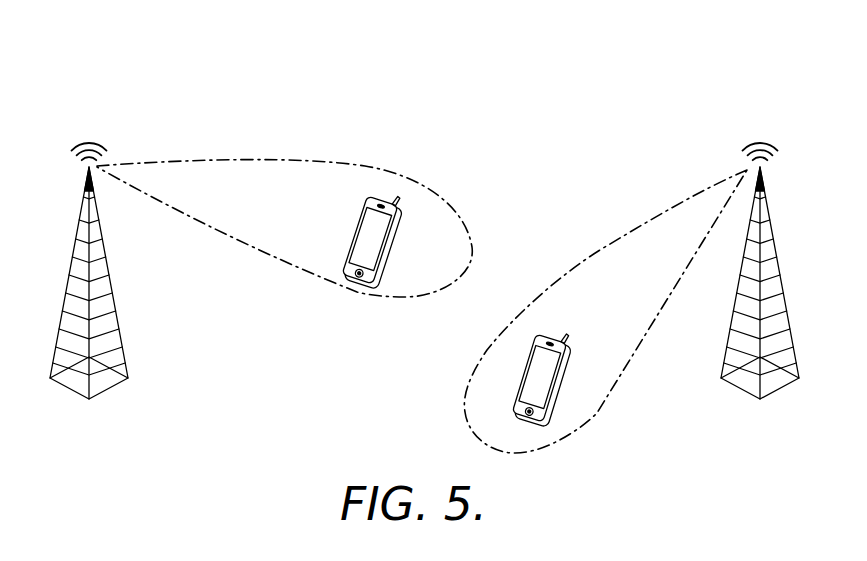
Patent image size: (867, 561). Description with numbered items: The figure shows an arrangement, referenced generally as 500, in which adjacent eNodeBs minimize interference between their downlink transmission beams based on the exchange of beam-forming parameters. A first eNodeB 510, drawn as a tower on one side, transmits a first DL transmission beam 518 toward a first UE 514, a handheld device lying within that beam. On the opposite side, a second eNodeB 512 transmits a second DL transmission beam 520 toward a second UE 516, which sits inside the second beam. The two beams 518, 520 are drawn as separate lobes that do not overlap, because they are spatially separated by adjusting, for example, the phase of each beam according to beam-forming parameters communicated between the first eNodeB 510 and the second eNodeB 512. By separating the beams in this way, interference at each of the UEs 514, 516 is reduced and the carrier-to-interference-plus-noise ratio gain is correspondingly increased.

The adjacent eNodeBs minimizing interference 500 is at (333, 50).
The first eNodeB 510 is at (76, 238).
The second eNodeB 512 is at (773, 236).
The first UE 514 is at (388, 241).
The second UE 516 is at (568, 347).
The first DL transmission beam 518 is at (383, 172).
The second DL transmission beam 520 is at (604, 249).